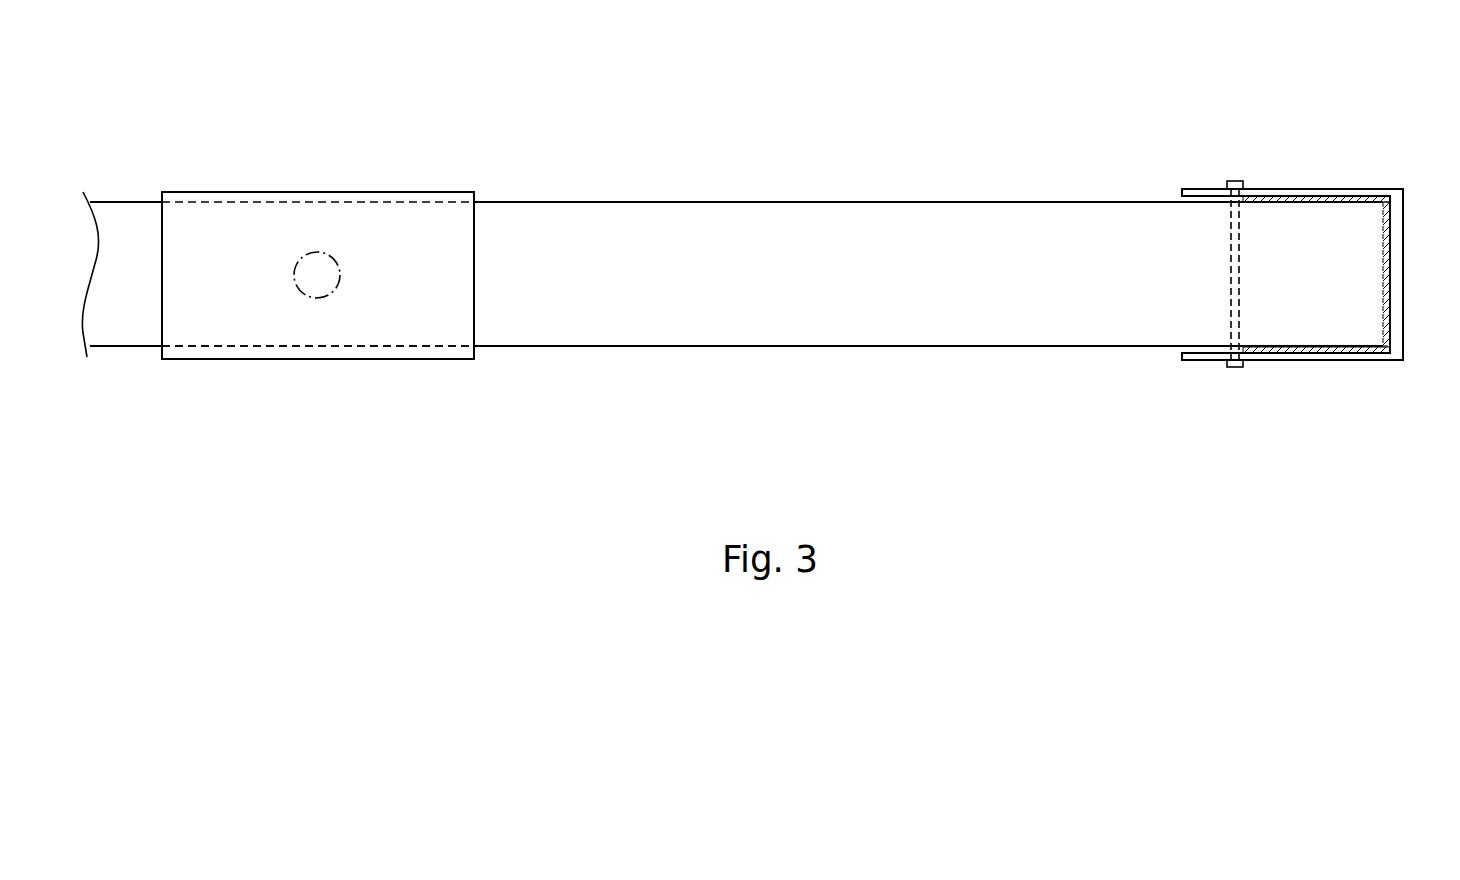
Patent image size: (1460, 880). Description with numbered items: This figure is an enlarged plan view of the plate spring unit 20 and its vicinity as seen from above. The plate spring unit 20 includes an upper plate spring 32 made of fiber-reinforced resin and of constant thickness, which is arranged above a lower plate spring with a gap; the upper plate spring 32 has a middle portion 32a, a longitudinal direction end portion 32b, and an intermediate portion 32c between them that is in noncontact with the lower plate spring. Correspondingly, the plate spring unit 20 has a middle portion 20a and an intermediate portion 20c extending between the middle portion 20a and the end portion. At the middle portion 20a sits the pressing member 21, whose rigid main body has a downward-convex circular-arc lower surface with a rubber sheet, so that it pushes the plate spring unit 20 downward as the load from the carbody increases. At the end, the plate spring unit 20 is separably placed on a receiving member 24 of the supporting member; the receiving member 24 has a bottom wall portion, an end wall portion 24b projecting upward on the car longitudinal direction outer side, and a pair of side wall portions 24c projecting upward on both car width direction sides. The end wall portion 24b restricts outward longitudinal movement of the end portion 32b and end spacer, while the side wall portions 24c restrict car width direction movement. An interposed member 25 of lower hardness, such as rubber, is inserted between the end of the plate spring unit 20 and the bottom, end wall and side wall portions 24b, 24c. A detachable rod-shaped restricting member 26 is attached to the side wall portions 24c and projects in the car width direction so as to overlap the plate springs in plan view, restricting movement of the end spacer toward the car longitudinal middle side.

The plate spring unit 20 is at (602, 200).
The middle portion 20a is at (229, 230).
The intermediate portion 20c is at (763, 202).
The pressing member 21 is at (380, 192).
The receiving member 24 is at (1318, 192).
The end wall portion 24b is at (1407, 340).
The side wall portions 24c is at (1290, 192).
The interposed member 25 is at (1363, 190).
The restricting member 26 is at (1232, 240).
The upper plate spring 32 is at (620, 335).
The middle portion 32a is at (280, 332).
The longitudinal direction end portion 32b is at (1278, 315).
The intermediate portion 32c is at (793, 328).